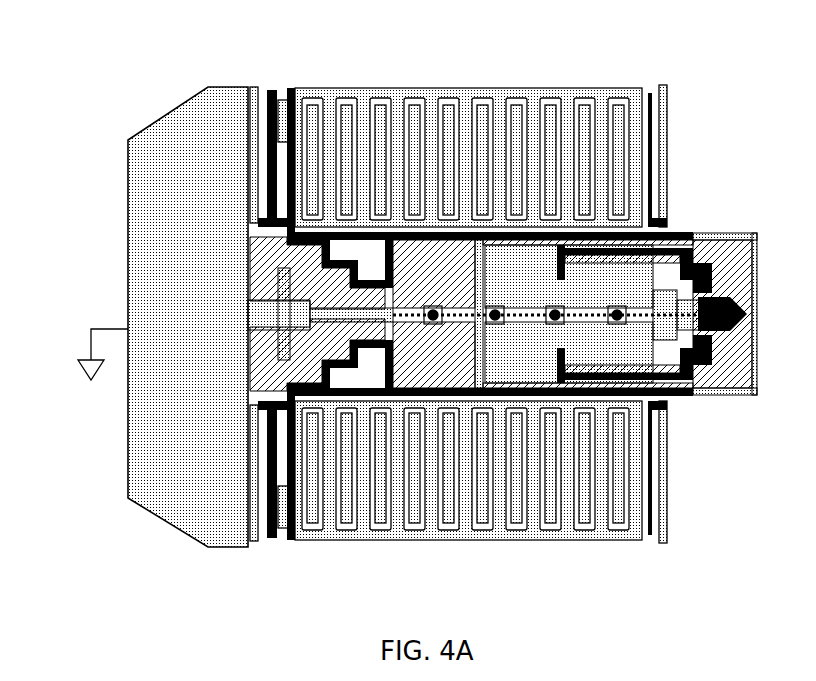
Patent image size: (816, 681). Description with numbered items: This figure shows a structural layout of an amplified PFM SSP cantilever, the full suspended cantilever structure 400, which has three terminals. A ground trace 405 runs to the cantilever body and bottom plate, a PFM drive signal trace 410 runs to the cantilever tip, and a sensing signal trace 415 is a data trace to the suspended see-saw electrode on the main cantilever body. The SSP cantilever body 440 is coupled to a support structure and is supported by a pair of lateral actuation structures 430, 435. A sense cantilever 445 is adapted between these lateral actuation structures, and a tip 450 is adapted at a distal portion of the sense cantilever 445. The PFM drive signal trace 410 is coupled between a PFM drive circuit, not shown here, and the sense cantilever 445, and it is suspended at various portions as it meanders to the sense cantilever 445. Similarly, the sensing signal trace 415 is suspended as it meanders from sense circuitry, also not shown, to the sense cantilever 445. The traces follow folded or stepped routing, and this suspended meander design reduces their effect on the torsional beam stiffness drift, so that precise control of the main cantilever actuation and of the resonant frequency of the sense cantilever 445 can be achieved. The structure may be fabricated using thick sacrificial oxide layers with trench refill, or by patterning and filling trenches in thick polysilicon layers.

The structure 400 is at (62, 42).
The ground trace 405 is at (83, 368).
The PFM drive signal trace 410 is at (258, 87).
The sensing signal trace 415 is at (260, 548).
The lateral actuation structure 430 is at (663, 468).
The lateral actuation structure 435 is at (668, 137).
The SSP cantilever body 440 is at (128, 234).
The sense cantilever 445 is at (723, 235).
The tip 450 is at (708, 330).